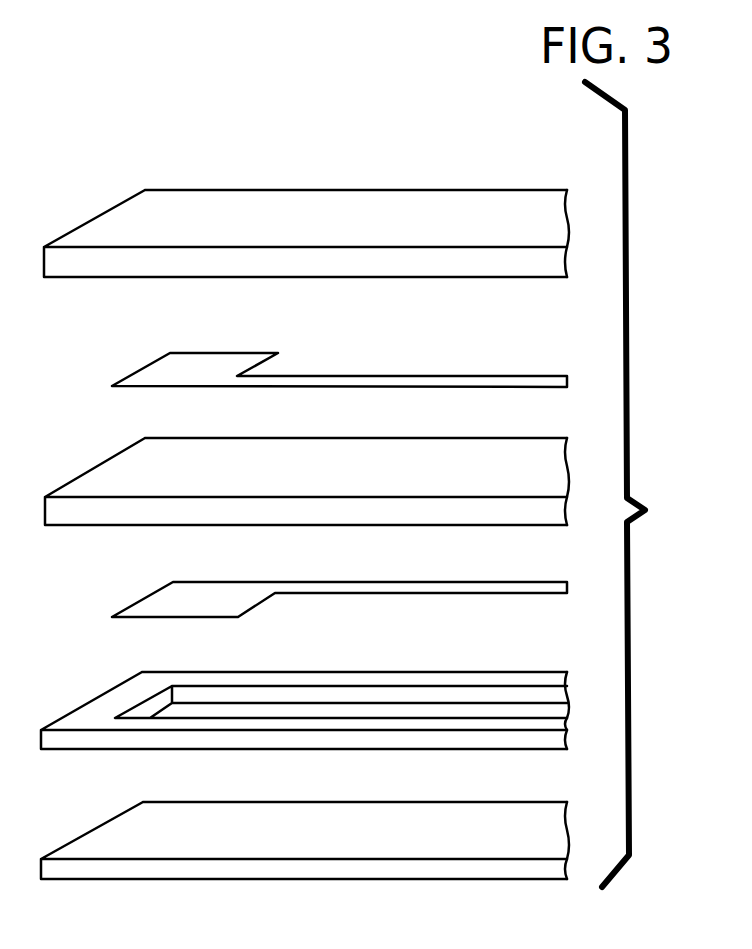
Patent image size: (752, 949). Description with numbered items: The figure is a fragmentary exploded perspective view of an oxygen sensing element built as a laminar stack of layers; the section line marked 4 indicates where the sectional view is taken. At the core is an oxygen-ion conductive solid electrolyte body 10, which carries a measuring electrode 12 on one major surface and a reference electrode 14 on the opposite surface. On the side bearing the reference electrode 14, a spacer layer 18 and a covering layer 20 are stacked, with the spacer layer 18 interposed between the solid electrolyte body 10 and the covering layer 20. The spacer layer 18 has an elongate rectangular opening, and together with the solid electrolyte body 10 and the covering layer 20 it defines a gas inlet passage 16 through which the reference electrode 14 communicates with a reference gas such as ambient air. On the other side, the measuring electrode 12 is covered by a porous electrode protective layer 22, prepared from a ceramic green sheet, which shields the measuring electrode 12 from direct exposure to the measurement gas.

The section line 4- 4 is at (202, 186).
The porous electrode protective layer 22 is at (120, 220).
The measuring electrode 12 is at (160, 369).
The solid electrolyte body 10 is at (115, 473).
The reference electrode 14 is at (162, 600).
The spacer layer 18 is at (331, 702).
The gas inlet passage 16 is at (543, 711).
The covering layer 20 is at (118, 828).